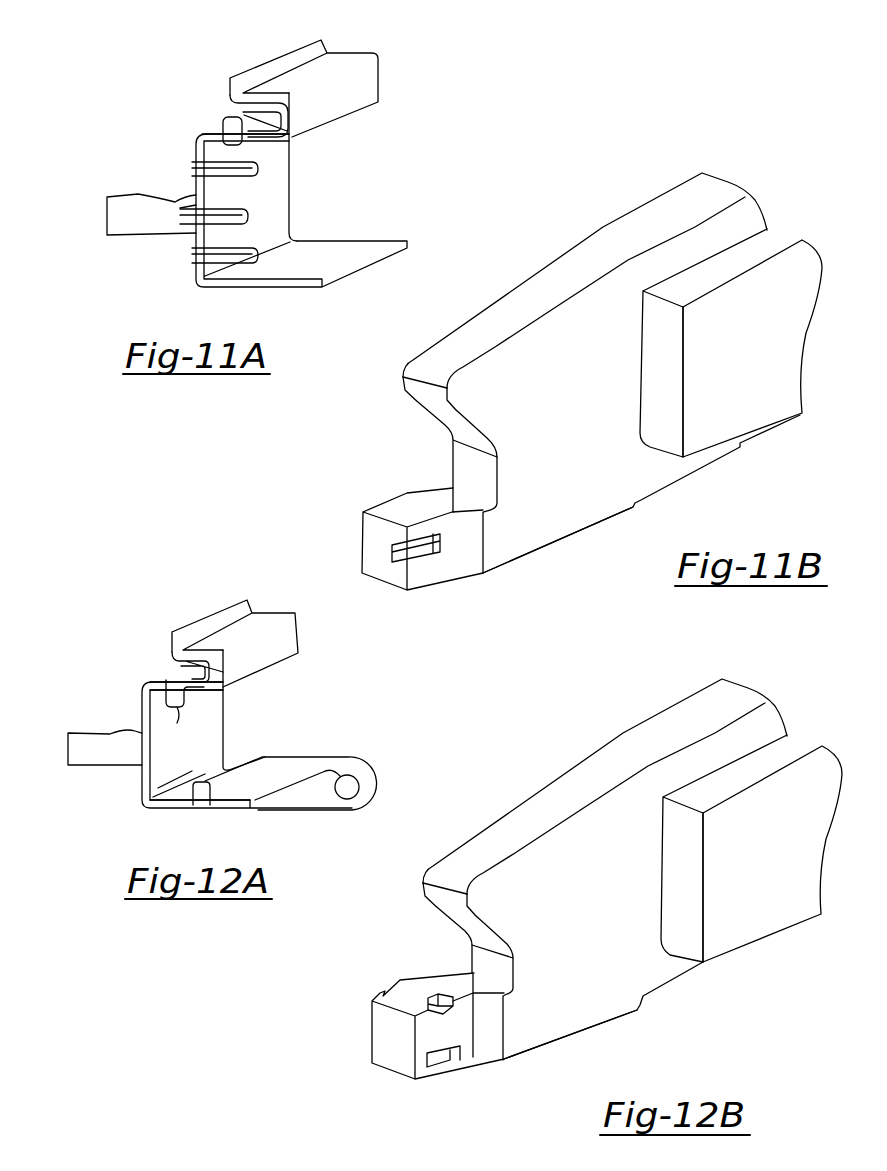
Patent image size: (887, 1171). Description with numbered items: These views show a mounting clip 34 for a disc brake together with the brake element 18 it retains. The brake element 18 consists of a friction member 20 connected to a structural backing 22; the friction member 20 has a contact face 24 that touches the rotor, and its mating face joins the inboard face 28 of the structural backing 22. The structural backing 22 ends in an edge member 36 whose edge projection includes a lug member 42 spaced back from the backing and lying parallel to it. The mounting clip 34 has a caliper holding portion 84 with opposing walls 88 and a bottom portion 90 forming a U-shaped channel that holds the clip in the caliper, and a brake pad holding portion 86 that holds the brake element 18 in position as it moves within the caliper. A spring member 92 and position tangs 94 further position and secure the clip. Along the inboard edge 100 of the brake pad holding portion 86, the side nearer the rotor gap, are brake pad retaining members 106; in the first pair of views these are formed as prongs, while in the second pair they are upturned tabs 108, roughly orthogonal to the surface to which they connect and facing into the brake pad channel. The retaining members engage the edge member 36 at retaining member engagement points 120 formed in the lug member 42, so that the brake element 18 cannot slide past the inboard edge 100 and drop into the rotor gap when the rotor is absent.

In FIG. 11B, the brake element 18 is at (613, 175).
In FIG. 12B, the brake element 18 is at (633, 681).
In FIG. 11B, the friction member 20 is at (737, 329).
In FIG. 12B, the friction member 20 is at (757, 834).
In FIG. 11B, the structural backing 22 is at (601, 356).
In FIG. 12B, the structural backing 22 is at (615, 852).
In FIG. 11B, the contact face 24 is at (751, 367).
In FIG. 12B, the contact face 24 is at (771, 873).
In FIG. 11B, the inboard face 28 is at (575, 395).
In FIG. 12B, the inboard face 28 is at (595, 903).
In FIG. 11A, the mounting clip 34 is at (190, 66).
In FIG. 12A, the mounting clip 34 is at (152, 596).
In FIG. 11B, the edge member 36 is at (578, 525).
In FIG. 12B, the edge member 36 is at (591, 1012).
In FIG. 11B, the lug member 42 is at (394, 557).
In FIG. 12B, the lug member 42 is at (414, 1023).
In FIG. 11A, the caliper holding portion 84 is at (372, 82).
In FIG. 12A, the caliper holding portion 84 is at (290, 633).
In FIG. 11A, the brake pad holding portion 86 is at (196, 240).
In FIG. 12A, the brake pad holding portion 86 is at (142, 777).
In FIG. 11A, the opposing walls 88 is at (240, 107).
In FIG. 12A, the opposing walls 88 is at (207, 667).
In FIG. 11A, the bottom portion 90 is at (287, 117).
In FIG. 12A, the bottom portion 90 is at (265, 652).
In FIG. 12A, the spring member 92 is at (356, 808).
In FIG. 11A, the position tang 94 is at (130, 208).
In FIG. 12A, the position tang 94 is at (93, 737).
In FIG. 12A, the inboard edge 100 is at (161, 783).
In FIG. 11A, the brake pad retaining members 106 is at (262, 200).
In FIG. 12A, the brake pad retaining members 106 is at (229, 726).
In FIG. 12A, the upturned tab 108 is at (205, 780).
In FIG. 11B, the retaining member engagement point 120 is at (417, 552).
In FIG. 12B, the retaining member engagement point 120 is at (438, 996).